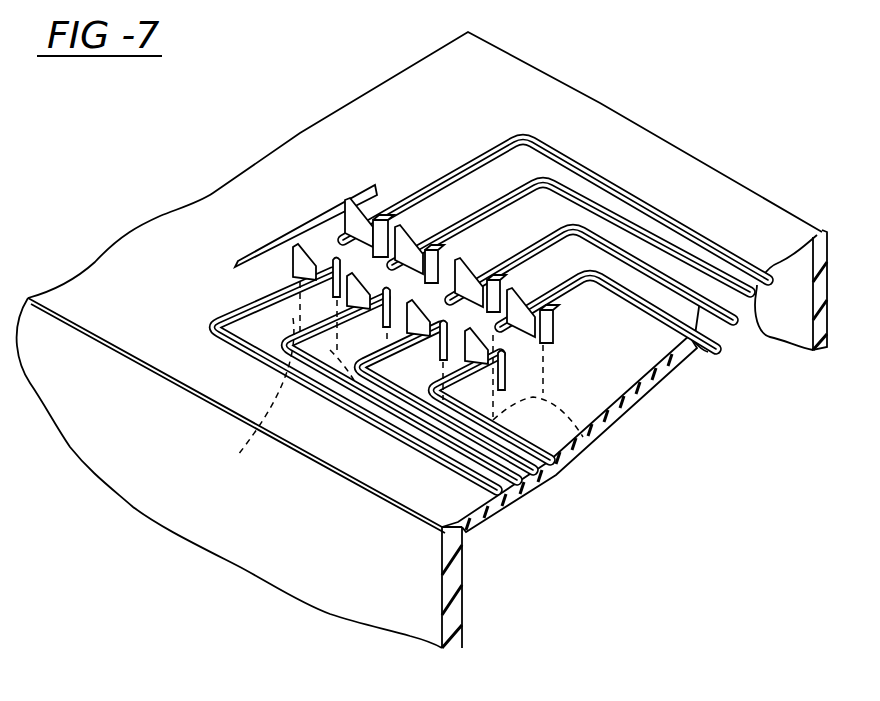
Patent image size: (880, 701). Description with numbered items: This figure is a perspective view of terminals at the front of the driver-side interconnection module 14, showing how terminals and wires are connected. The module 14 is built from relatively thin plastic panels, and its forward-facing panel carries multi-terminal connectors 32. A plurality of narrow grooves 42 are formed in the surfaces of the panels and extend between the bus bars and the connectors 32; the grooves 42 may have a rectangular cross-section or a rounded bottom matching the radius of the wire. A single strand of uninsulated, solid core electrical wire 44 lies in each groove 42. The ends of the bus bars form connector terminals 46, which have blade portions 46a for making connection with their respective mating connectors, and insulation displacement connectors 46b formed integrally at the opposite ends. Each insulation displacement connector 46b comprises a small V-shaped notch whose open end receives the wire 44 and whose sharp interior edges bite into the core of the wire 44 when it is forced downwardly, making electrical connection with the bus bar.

The driver-side interconnection module 14 is at (703, 154).
The multi-terminal connectors 32 is at (322, 215).
The narrow grooves 42 is at (712, 250).
The electrical wire 44 is at (242, 256).
The connector terminals 46 is at (287, 254).
The blade portions 46a is at (300, 430).
The insulation displacement connectors 46b is at (440, 215).